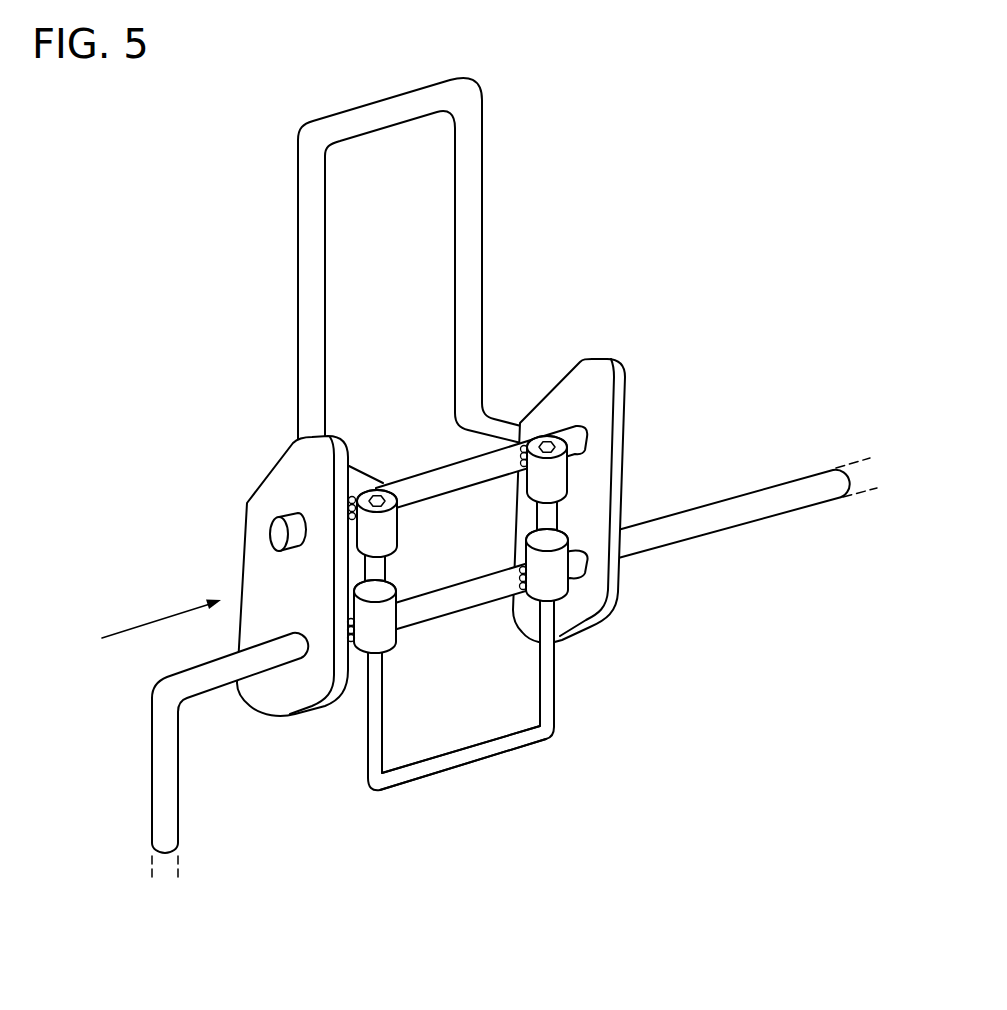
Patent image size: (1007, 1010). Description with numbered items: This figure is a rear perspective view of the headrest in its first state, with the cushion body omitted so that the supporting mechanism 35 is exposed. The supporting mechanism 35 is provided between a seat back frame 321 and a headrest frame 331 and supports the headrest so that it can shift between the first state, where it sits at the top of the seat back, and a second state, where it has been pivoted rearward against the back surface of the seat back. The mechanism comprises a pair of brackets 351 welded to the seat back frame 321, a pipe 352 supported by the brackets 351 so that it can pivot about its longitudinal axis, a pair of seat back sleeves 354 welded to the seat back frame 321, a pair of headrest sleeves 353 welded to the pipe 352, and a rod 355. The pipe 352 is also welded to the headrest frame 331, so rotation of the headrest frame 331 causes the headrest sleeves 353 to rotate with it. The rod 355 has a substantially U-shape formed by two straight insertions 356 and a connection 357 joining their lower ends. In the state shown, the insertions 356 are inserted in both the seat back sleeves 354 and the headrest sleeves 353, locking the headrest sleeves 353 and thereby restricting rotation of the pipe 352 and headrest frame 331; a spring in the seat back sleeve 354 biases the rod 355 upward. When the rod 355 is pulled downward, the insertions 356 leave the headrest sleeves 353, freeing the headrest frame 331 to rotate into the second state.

The supporting mechanism 35 is at (714, 172).
The seat back frame 321 is at (165, 770).
The headrest frame 331 is at (472, 225).
The bracket 351 is at (277, 487).
The pipe 352 is at (457, 474).
The headrest sleeve 353 is at (388, 537).
The seat back sleeve 354 is at (560, 587).
The rod 355 is at (565, 764).
The insertion 356 is at (548, 678).
The connection 357 is at (463, 757).